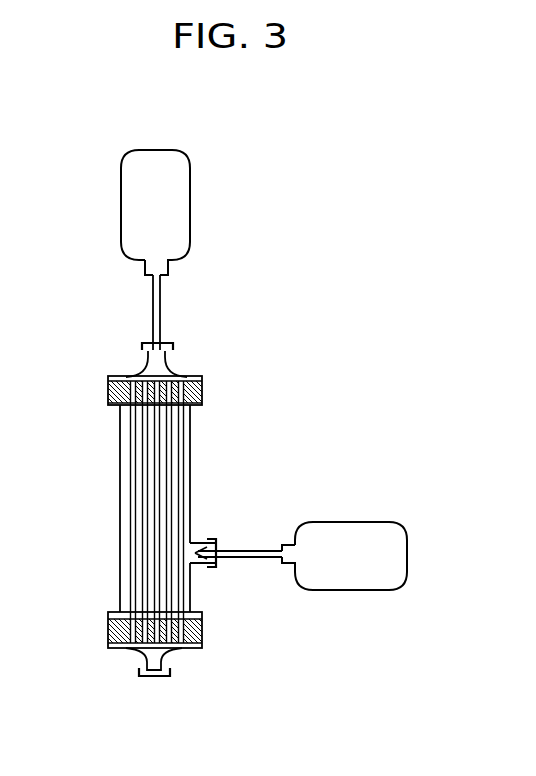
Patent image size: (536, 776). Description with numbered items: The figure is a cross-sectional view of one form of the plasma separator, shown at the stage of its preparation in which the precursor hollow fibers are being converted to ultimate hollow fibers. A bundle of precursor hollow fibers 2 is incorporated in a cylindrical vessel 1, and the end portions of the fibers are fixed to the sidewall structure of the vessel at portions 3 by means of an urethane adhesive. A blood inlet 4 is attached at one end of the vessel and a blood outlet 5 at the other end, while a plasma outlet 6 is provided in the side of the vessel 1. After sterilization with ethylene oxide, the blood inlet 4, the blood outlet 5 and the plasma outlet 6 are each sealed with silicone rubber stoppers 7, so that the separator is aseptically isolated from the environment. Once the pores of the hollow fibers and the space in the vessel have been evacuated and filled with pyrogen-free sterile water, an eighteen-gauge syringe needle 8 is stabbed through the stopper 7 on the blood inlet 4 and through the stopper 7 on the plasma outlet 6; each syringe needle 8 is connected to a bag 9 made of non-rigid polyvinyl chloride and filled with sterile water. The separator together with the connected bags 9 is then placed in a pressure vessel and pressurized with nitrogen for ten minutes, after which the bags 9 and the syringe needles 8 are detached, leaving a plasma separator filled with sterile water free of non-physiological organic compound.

The cylindrical vessel 1 is at (120, 465).
The hollow fiber membranes 2 is at (178, 448).
The fixing portions 3 is at (109, 393).
The blood inlet 4 is at (148, 363).
The blood outlet 5 is at (148, 657).
The plasma outlet 6 is at (193, 540).
The silicone rubber stoppers 7 is at (175, 343).
The syringe needle 8 is at (160, 302).
The bag 9 is at (190, 170).